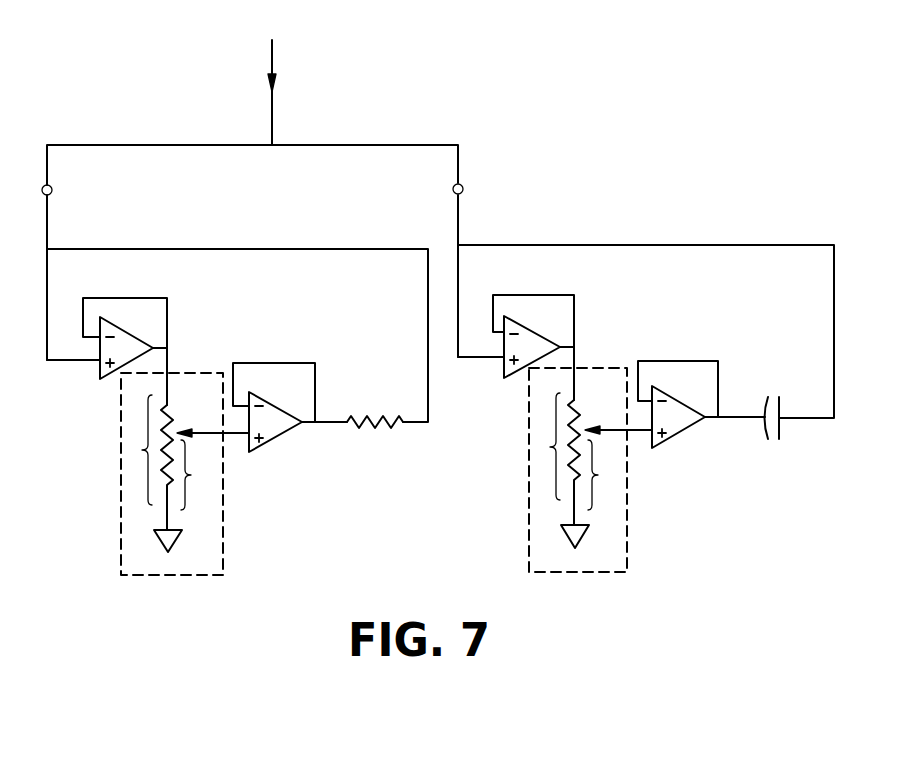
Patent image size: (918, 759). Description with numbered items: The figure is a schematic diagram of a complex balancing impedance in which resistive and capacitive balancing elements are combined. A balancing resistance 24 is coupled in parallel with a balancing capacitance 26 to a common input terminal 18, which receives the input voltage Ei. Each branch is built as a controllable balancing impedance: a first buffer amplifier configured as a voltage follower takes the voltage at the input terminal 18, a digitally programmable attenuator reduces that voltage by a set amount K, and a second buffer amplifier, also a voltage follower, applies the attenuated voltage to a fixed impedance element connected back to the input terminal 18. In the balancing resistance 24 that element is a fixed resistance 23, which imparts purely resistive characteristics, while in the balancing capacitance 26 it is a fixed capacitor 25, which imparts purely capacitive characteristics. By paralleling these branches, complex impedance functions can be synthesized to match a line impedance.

The input terminal 18 is at (282, 44).
The fixed resistance 23 is at (380, 428).
The balancing resistance 24 is at (77, 129).
The fixed capacitor 25 is at (770, 441).
The balancing capacitance 26 is at (662, 226).